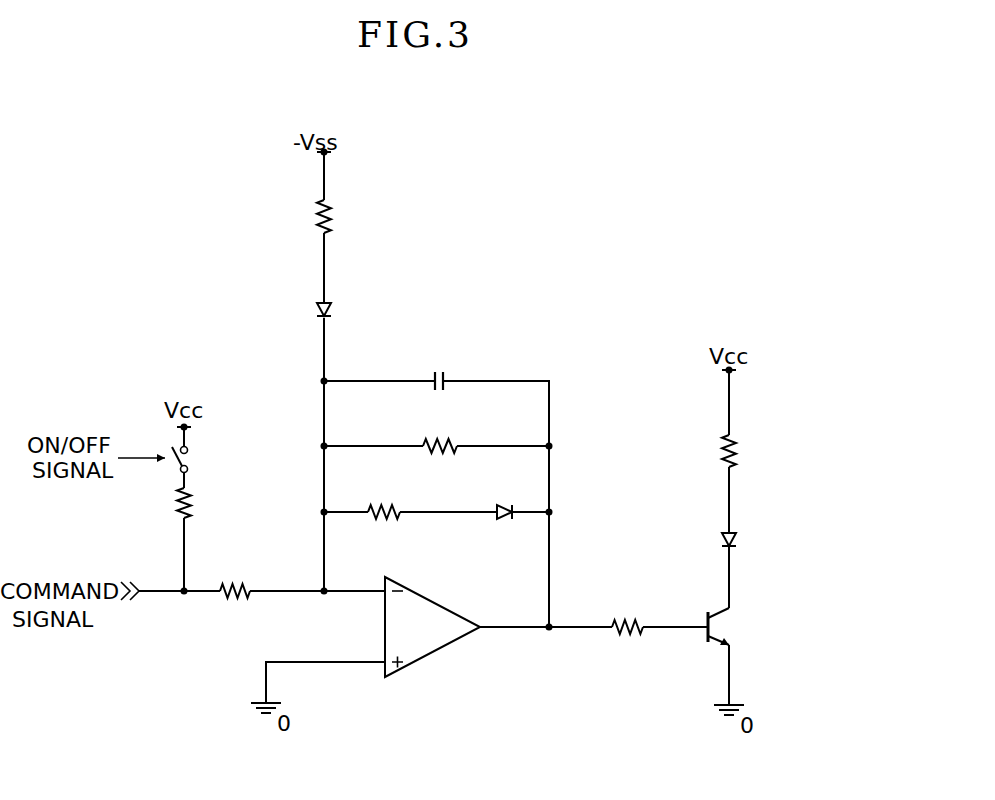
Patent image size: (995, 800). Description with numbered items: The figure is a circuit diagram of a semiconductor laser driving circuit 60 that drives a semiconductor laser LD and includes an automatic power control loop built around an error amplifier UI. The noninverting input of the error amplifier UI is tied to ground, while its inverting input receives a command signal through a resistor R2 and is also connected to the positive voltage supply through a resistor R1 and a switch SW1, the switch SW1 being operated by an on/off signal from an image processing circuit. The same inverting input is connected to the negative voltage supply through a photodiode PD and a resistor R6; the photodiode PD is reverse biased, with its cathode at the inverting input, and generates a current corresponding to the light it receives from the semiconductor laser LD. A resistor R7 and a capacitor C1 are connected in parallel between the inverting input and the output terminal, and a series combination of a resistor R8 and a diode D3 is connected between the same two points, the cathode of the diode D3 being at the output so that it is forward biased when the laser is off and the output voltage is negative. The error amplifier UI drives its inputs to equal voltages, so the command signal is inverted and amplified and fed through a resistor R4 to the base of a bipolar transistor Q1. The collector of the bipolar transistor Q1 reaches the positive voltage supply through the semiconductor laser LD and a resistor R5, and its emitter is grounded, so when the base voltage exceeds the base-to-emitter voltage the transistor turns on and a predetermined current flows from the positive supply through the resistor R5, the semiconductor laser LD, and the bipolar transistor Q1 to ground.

The semiconductor laser driving circuit 60 is at (585, 145).
The resistor R6 is at (331, 216).
The photodiode PD is at (331, 310).
The capacitor C1 is at (434, 377).
The resistor R7 is at (439, 440).
The resistor R8 is at (385, 506).
The diode D3 is at (504, 505).
The error amplifier UI is at (446, 602).
The resistor R2 is at (235, 583).
The resistor R1 is at (191, 503).
The switch SW1 is at (188, 449).
The resistor R4 is at (626, 618).
The bipolar transistor Q1 is at (731, 627).
The resistor R5 is at (736, 452).
The semiconductor laser LD is at (737, 540).